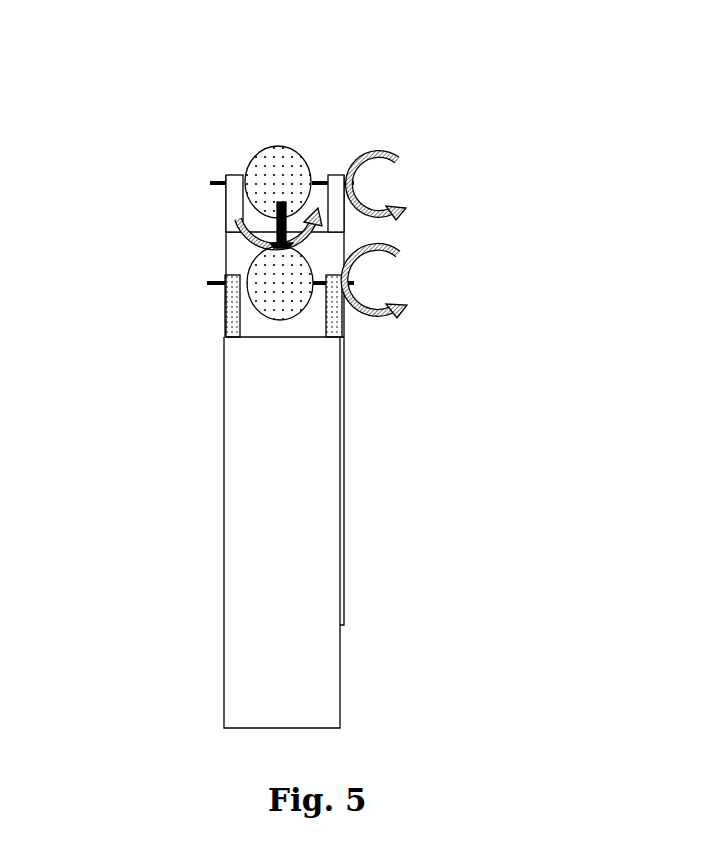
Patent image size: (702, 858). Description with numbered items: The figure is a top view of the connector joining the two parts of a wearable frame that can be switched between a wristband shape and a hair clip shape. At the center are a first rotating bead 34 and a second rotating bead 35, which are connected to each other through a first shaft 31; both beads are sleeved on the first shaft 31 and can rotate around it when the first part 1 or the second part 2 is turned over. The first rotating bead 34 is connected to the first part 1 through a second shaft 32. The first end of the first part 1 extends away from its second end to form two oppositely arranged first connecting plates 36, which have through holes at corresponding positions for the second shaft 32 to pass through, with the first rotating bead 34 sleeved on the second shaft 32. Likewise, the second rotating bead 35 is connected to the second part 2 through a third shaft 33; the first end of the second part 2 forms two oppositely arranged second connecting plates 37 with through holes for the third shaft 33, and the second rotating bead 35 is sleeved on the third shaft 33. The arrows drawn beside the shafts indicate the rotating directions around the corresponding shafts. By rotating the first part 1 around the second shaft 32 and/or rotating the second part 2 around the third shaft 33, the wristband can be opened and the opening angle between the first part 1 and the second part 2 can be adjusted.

The first part 1 is at (238, 246).
The second part 2 is at (247, 687).
The first shaft 31 is at (274, 212).
The second shaft 32 is at (354, 183).
The third shaft 33 is at (354, 284).
The first rotating bead 34 is at (285, 148).
The second rotating bead 35 is at (272, 308).
The first connecting plates 36 is at (233, 188).
The second connecting plates 37 is at (233, 332).